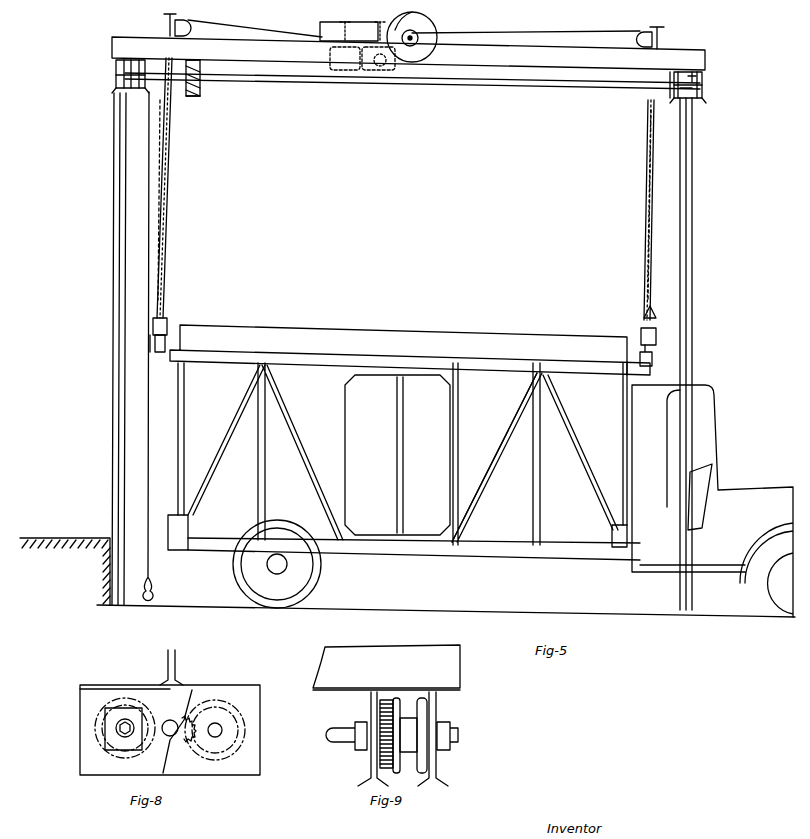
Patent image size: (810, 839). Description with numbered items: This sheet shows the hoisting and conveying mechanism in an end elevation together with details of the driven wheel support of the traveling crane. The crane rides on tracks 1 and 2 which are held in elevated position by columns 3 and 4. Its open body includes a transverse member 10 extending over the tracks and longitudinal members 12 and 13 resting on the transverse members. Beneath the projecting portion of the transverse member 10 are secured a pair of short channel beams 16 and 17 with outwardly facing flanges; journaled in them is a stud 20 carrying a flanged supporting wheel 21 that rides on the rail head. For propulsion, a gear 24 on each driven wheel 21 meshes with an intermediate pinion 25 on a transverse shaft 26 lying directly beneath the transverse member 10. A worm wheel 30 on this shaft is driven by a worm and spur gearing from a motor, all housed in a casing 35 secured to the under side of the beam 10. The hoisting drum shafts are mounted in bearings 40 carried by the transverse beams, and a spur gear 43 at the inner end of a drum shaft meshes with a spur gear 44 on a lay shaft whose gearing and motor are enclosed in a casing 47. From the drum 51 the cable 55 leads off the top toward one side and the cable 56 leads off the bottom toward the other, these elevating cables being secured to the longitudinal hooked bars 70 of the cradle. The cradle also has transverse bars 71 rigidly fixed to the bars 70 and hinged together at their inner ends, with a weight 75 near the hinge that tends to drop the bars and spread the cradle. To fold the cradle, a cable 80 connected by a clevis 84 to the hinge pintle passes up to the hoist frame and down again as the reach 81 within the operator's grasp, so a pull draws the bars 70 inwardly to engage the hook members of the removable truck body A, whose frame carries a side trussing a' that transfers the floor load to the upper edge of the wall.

In FIG. 5, the track 1 is at (696, 104).
In FIG. 5, the track 2 is at (118, 88).
In FIG. 5, the column 3 is at (693, 303).
In FIG. 5, the column 4 is at (112, 343).
In FIG. 5, the transverse member 10 is at (408, 53).
In FIG. 8, the transverse member 10 is at (176, 662).
In FIG. 9, the transverse member 10 is at (386, 667).
In FIG. 5, the longitudinal member 12 is at (660, 36).
In FIG. 5, the longitudinal member 13 is at (168, 18).
In FIG. 5, the channel beam 16 is at (328, 24).
In FIG. 8, the channel beam 16 is at (80, 768).
In FIG. 9, the channel beam 16 is at (437, 769).
In FIG. 5, the channel beam 17 is at (674, 98).
In FIG. 8, the channel beam 17 is at (260, 756).
In FIG. 9, the channel beam 17 is at (368, 767).
In FIG. 8, the stud 20 is at (118, 730).
In FIG. 9, the stud 20 is at (460, 735).
In FIG. 5, the supporting wheel 21 is at (698, 80).
In FIG. 9, the supporting wheel 21 is at (410, 735).
In FIG. 5, the gear 24 is at (678, 112).
In FIG. 8, the gear 24 is at (105, 715).
In FIG. 9, the gear 24 is at (383, 703).
In FIG. 8, the pinion 25 is at (170, 719).
In FIG. 5, the transverse shaft 26 is at (553, 82).
In FIG. 8, the transverse shaft 26 is at (180, 745).
In FIG. 5, the worm wheel 30 is at (200, 82).
In FIG. 5, the casing 35 is at (190, 96).
In FIG. 5, the bearing 40 is at (420, 38).
In FIG. 5, the spur gear 43 is at (428, 20).
In FIG. 5, the spur gear 44 is at (372, 68).
In FIG. 5, the casing 47 is at (342, 68).
In FIG. 5, the drum 51 is at (402, 22).
In FIG. 5, the cable 55 is at (551, 34).
In FIG. 5, the cable 56 is at (274, 32).
In FIG. 5, the longitudinal hooked bar 70 is at (538, 360).
In FIG. 5, the transverse bar 71 is at (652, 358).
In FIG. 5, the weight 75 is at (659, 331).
In FIG. 5, the cable 80 is at (162, 216).
In FIG. 5, the cable reach 81 is at (147, 403).
In FIG. 5, the clevis 84 is at (652, 320).
In FIG. 5, the removable truck body A is at (404, 461).
In FIG. 5, the side trussing a' is at (494, 457).